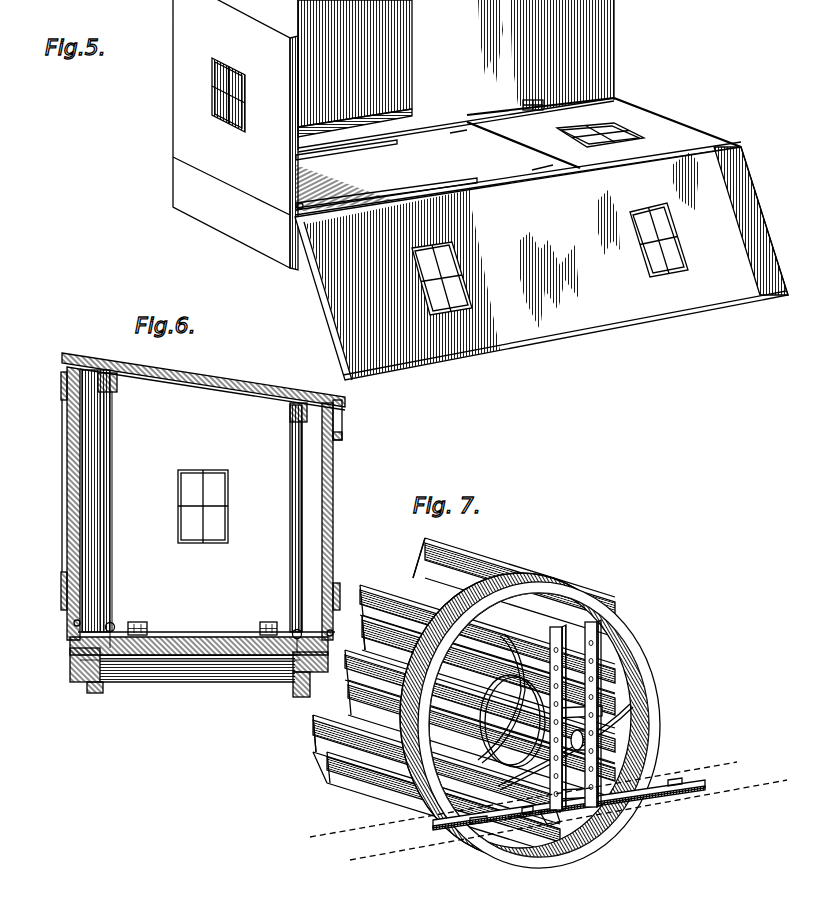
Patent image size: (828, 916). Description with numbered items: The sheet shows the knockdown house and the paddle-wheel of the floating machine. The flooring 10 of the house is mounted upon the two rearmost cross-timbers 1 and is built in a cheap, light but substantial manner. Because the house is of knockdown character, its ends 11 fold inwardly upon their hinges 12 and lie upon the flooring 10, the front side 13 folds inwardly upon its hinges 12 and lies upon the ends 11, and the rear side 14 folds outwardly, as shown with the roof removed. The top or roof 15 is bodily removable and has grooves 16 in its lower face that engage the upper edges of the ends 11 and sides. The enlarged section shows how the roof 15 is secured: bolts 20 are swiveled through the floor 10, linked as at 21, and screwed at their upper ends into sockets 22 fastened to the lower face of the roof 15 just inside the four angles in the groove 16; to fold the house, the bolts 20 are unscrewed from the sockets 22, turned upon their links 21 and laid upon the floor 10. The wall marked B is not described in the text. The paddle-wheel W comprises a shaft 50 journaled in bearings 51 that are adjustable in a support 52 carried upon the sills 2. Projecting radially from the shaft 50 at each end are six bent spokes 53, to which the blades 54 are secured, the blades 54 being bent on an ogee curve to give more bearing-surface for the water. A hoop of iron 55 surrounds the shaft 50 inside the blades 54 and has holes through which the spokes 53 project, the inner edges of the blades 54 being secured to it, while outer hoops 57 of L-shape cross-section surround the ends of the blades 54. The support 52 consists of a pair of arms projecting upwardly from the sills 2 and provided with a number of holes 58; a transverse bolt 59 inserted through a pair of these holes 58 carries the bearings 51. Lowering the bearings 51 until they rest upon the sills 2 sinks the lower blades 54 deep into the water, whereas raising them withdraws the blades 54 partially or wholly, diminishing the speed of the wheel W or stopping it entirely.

In FIG. 6, the cross-timbers 1 is at (70, 660).
In FIG. 6, the sills 2 is at (197, 677).
In FIG. 7, the sills 2 is at (710, 777).
In FIG. 5, the flooring 10 is at (518, 172).
In FIG. 6, the flooring 10 is at (200, 636).
In FIG. 5, the ends 11 is at (457, 135).
In FIG. 6, the ends 11 is at (192, 501).
In FIG. 5, the hinges 12 is at (525, 102).
In FIG. 6, the hinges 12 is at (73, 623).
In FIG. 5, the front side 13 is at (456, 76).
In FIG. 6, the front side 13 is at (68, 455).
In FIG. 5, the rear side 14 is at (606, 325).
In FIG. 6, the rear side 14 is at (336, 467).
In FIG. 6, the roof 15 is at (204, 376).
In FIG. 6, the grooves 16 is at (60, 370).
In FIG. 5, the bolts 20 is at (402, 183).
In FIG. 6, the bolts 20 is at (110, 540).
In FIG. 5, the links 21 is at (308, 195).
In FIG. 6, the links 21 is at (112, 622).
In FIG. 6, the sockets 22 is at (118, 385).
In FIG. 7, the shaft 50 is at (372, 650).
In FIG. 7, the bearings 51 is at (583, 723).
In FIG. 7, the support 52 is at (597, 667).
In FIG. 7, the bent spokes 53 is at (510, 666).
In FIG. 7, the blades 54 is at (420, 580).
In FIG. 7, the hoop of iron 55 is at (505, 700).
In FIG. 7, the outer hoops 57 is at (657, 692).
In FIG. 7, the holes 58 is at (594, 640).
In FIG. 7, the transverse bolt 59 is at (598, 762).
In FIG. 6, the wall B is at (327, 526).
In FIG. 7, the wheel W is at (464, 696).